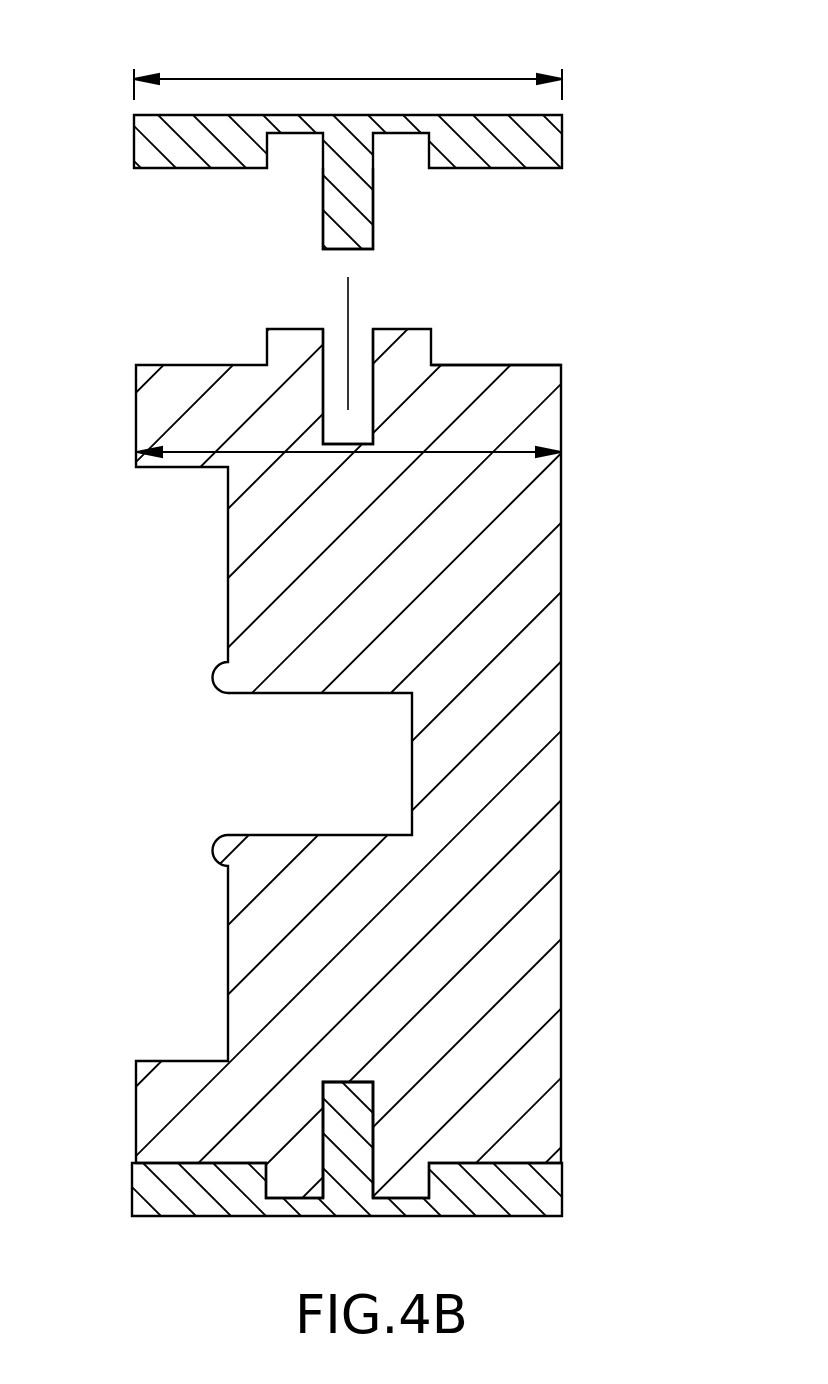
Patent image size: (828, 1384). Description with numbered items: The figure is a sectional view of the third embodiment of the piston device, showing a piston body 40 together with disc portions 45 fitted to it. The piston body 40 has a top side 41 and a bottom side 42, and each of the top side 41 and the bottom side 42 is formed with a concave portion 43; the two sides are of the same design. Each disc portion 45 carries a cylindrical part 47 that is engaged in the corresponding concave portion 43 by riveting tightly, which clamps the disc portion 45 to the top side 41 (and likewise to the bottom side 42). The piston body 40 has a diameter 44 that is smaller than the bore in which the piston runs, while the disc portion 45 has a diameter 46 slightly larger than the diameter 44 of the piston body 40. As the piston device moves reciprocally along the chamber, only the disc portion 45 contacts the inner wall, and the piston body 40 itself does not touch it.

The piston body 40 is at (561, 815).
The top side 41 is at (440, 366).
The bottom side 42 is at (520, 1163).
The concave portion 43 is at (373, 387).
The diameter of the piston body 44 is at (510, 453).
The disc portion 45 is at (562, 143).
The diameter of the disc portion 46 is at (312, 77).
The cylindrical part 47 is at (323, 192).